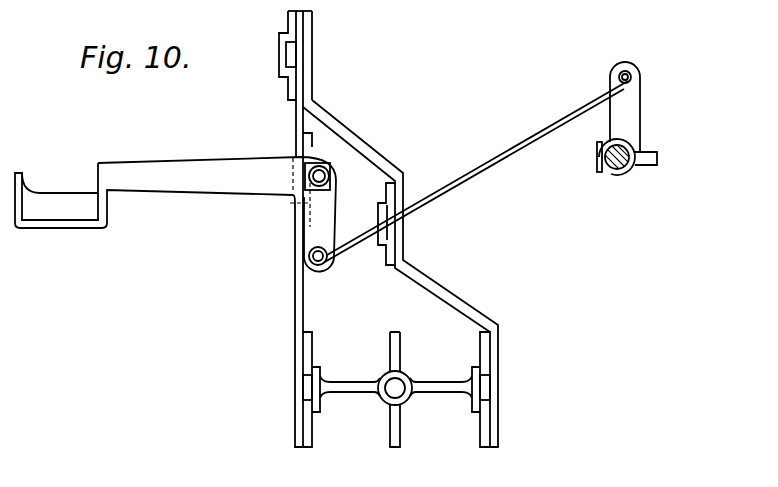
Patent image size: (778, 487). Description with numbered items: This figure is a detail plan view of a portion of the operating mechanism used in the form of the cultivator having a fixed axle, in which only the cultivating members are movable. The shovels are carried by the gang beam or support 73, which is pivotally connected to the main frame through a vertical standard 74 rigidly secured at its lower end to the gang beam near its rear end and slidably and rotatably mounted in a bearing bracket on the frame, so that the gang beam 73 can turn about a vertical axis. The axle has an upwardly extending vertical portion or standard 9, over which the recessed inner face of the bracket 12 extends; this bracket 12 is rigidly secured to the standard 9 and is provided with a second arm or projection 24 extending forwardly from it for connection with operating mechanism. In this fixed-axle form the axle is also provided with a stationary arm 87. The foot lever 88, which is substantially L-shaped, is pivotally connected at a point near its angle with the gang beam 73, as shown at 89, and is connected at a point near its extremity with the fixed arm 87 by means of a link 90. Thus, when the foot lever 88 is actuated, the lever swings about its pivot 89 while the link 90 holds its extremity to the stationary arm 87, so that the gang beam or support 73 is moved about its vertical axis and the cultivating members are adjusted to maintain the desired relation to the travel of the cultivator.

The standard 9 is at (612, 172).
The bracket 12 is at (637, 173).
The second arm or projection 24 is at (638, 150).
The gang beam 73 is at (295, 292).
The vertical standard 74 is at (394, 386).
The stationary arm 87 is at (632, 108).
The foot lever 88 is at (206, 165).
The pivotal connection 89 is at (303, 177).
The link 90 is at (488, 154).